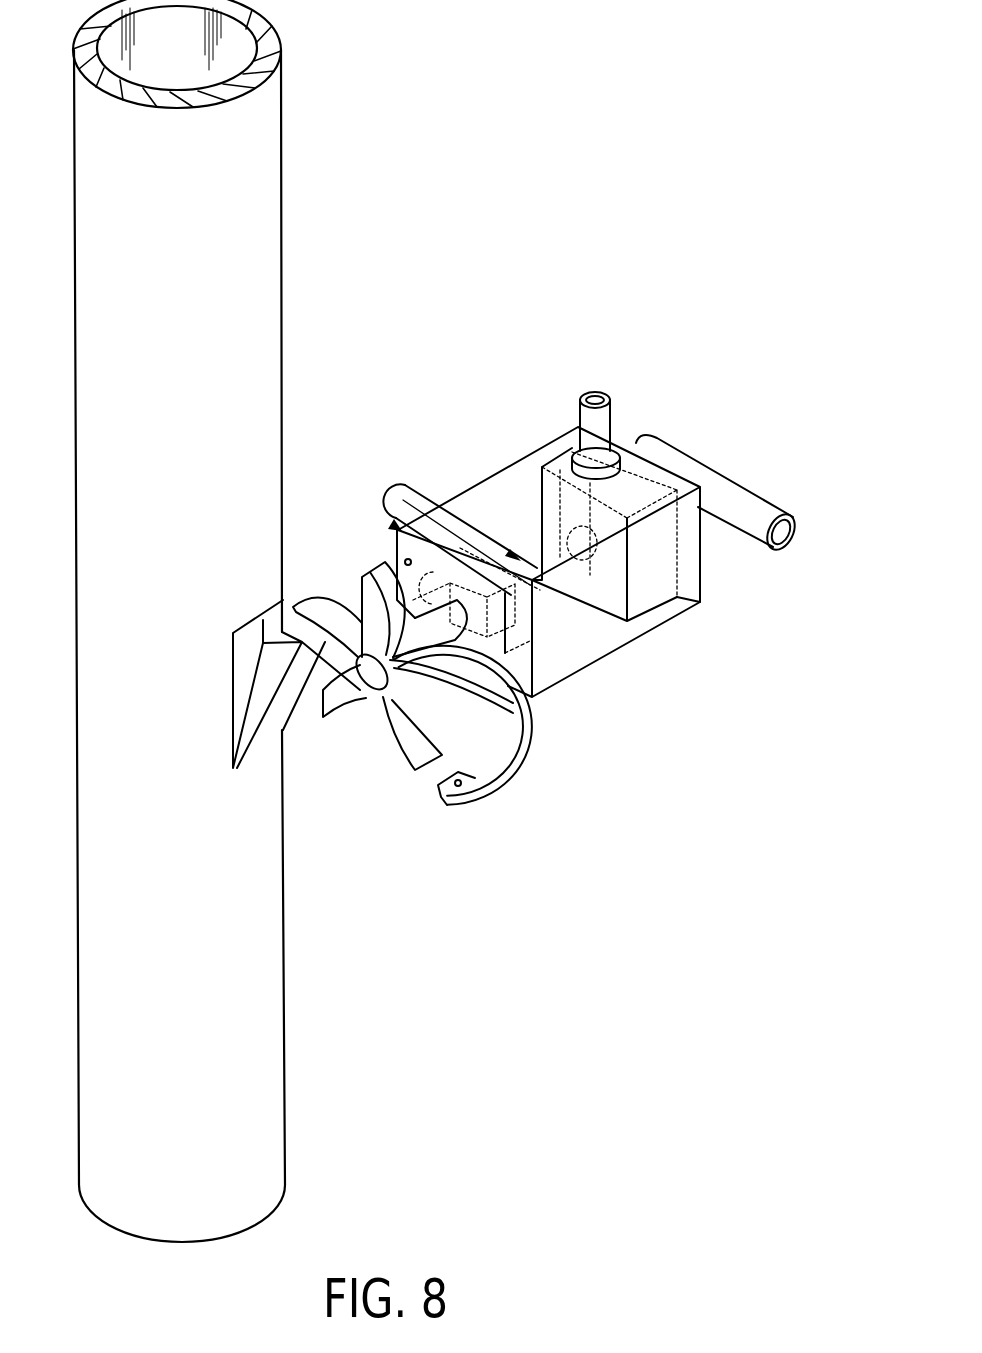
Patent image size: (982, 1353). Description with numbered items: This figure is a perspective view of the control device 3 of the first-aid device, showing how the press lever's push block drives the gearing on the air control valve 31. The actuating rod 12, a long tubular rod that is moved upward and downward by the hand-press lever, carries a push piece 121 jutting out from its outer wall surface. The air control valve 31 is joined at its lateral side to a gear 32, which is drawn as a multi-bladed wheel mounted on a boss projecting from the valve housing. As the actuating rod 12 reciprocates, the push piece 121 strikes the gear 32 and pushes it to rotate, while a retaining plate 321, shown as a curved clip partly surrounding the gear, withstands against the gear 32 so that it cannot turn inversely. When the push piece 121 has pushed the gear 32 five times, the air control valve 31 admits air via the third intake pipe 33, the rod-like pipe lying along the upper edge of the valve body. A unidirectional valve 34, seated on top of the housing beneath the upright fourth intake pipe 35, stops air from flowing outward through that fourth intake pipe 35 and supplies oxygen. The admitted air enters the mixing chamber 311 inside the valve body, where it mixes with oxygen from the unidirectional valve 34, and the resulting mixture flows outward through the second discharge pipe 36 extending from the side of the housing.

The actuating rod 12 is at (257, 147).
The push piece 121 is at (290, 607).
The control device 3 is at (520, 402).
The air control valve 31 is at (592, 643).
The mixing chamber 311 is at (698, 602).
The gear 32 is at (400, 743).
The retaining plate 321 is at (517, 753).
The third intake pipe 33 is at (410, 497).
The unidirectional valve 34 is at (625, 455).
The fourth intake pipe 35 is at (602, 423).
The second discharge pipe 36 is at (765, 520).